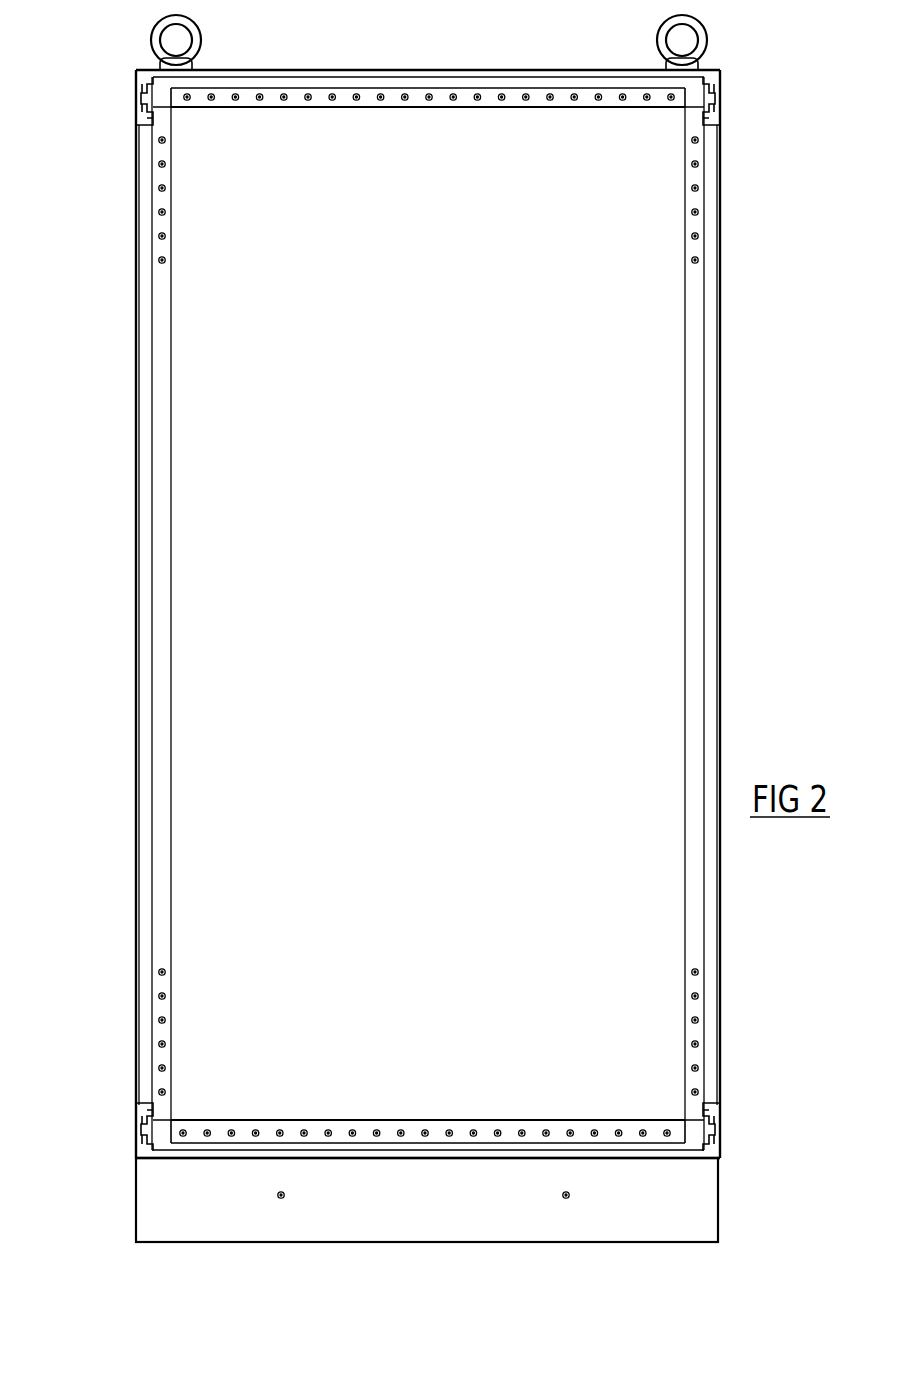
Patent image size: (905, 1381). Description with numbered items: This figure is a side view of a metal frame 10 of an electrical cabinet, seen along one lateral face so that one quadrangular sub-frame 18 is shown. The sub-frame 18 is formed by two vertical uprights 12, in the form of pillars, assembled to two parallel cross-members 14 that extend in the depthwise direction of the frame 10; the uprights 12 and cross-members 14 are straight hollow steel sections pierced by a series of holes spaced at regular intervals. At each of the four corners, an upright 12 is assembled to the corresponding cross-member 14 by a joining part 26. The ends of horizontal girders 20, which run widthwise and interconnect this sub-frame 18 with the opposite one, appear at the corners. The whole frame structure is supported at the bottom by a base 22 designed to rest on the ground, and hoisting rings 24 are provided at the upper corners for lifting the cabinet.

The metal frame 10 is at (124, 1244).
The vertical upright 12 is at (708, 658).
The cross-member 14 is at (393, 107).
The quadrangular sub-frame 18 is at (126, 552).
The horizontal girder 20 is at (138, 112).
The base 22 is at (248, 1228).
The hoisting ring 24 is at (152, 24).
The joining part 26 is at (168, 103).